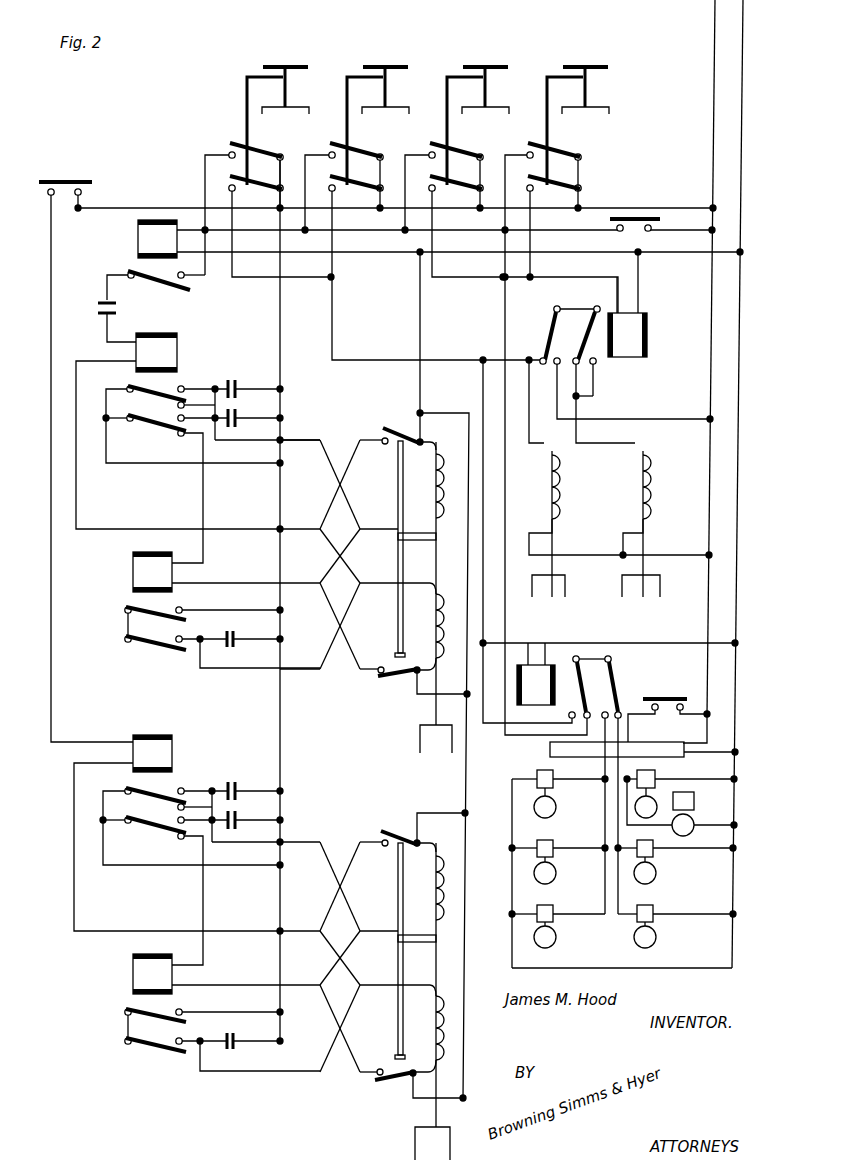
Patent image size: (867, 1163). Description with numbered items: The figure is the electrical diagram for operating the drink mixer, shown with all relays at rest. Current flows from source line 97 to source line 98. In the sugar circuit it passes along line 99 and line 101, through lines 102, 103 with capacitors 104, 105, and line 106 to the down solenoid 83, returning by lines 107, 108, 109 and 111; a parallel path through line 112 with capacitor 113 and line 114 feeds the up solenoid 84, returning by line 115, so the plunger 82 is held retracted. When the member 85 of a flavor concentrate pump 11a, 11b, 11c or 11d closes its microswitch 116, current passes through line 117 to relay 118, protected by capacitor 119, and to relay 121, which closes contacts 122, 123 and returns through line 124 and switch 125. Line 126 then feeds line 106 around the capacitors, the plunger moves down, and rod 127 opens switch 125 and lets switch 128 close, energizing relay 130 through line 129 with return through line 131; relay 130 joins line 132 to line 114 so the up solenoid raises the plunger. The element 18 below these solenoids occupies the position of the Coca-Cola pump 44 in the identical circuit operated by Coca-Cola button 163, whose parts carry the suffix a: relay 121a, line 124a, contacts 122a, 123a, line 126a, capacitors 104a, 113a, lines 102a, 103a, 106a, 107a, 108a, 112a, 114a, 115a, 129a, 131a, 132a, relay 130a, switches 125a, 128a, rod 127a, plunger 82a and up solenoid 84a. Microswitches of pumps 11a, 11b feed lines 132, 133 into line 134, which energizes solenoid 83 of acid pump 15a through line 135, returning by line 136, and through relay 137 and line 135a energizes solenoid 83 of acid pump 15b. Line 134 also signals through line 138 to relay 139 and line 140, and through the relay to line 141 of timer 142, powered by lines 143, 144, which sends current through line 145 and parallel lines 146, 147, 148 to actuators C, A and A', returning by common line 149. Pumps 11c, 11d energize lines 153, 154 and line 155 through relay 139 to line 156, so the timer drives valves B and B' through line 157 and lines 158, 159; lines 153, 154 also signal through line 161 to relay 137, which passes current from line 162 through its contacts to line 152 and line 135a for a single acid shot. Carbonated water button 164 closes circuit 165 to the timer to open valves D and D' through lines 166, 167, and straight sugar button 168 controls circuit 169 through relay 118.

The flavor concentrate pump 11a is at (314, 76).
The flavor concentrate pump 11b is at (412, 76).
The flavor concentrate pump 11c is at (512, 76).
The flavor concentrate pump 11d is at (600, 90).
The actuating member 85 is at (250, 78).
The microswitch 116 is at (264, 142).
The line 117 is at (197, 168).
The source line 97 is at (712, 92).
The source line 98 is at (743, 90).
The line 99 is at (594, 206).
The line 111 is at (539, 250).
The straight sugar button 168 is at (640, 216).
The circuit 169 is at (656, 234).
The Coca-Cola button 163 is at (45, 176).
The relay 118 is at (129, 243).
The capacitor 119 is at (86, 295).
The relay 121 is at (184, 327).
The line 124 is at (78, 484).
The relay contact 122 is at (140, 386).
The relay contact 123 is at (141, 420).
The line 126 is at (146, 464).
The capacitor 104 is at (229, 378).
The line 102 is at (244, 384).
The line 103 is at (254, 414).
The capacitor 105 is at (234, 430).
The line 106 is at (204, 403).
The line 129 is at (204, 500).
The relay 130 is at (127, 583).
The line 131 is at (302, 576).
The line 132 is at (238, 602).
The line 112 is at (252, 636).
The capacitor 113 is at (228, 654).
The line 114 is at (296, 666).
The line 133 is at (234, 274).
The line 134 is at (364, 358).
The line 153 is at (444, 274).
The line 154 is at (506, 268).
The line 161 is at (560, 276).
The line 101 is at (280, 308).
The relay 137 is at (656, 303).
The line 152 is at (594, 370).
The line 162 is at (670, 342).
The line 135a is at (586, 436).
The line 135 is at (525, 432).
The down solenoid 83 is at (554, 470).
The line 155 is at (504, 480).
The line 136 is at (678, 548).
The acid pump 15a is at (552, 574).
The acid pump 15b is at (648, 574).
The line 109 is at (421, 370).
The line 138 is at (468, 400).
The switch 128 is at (368, 430).
The line 115 is at (402, 412).
The up solenoid 84 is at (446, 460).
The line 108 is at (450, 534).
The rod 127 is at (397, 606).
The solenoid plunger 82 is at (439, 562).
The switch 125 is at (386, 682).
The line 107 is at (450, 700).
The valve 18 is at (420, 736).
The relay 121a is at (185, 747).
The line 124a is at (76, 886).
The relay contact 122a is at (150, 788).
The line 126a is at (146, 866).
The relay contact 123a is at (146, 838).
The capacitor 104a is at (230, 778).
The line 102a is at (244, 788).
The line 103a is at (248, 814).
The line 106a is at (209, 794).
The line 129a is at (194, 918).
The relay 130a is at (127, 988).
The line 131a is at (294, 985).
The line 132a is at (244, 1008).
The line 112a is at (256, 1038).
The capacitor 113a is at (230, 1054).
The line 114a is at (299, 1070).
The switch 128a is at (382, 826).
The line 115a is at (408, 814).
The up solenoid 84a is at (444, 856).
The line 108a is at (466, 904).
The rod 127a is at (395, 900).
The solenoid plunger 82a is at (442, 948).
The switch 125a is at (376, 1084).
The line 107a is at (463, 1098).
The Coca-Cola pump 44 is at (414, 1130).
The line 140 is at (594, 642).
The relay 139 is at (621, 661).
The line 141 is at (602, 710).
The line 156 is at (630, 710).
The carbonated water button 164 is at (668, 695).
The circuit 165 is at (692, 712).
The line 143 is at (696, 736).
The line 144 is at (720, 744).
The line 145 is at (606, 760).
The timer 142 is at (695, 756).
The line 146 is at (561, 782).
The line 157 is at (616, 816).
The line 147 is at (574, 857).
The line 148 is at (578, 918).
The common line 149 is at (566, 968).
The line 166 is at (735, 782).
The line 167 is at (735, 824).
The line 158 is at (735, 852).
The line 159 is at (733, 912).